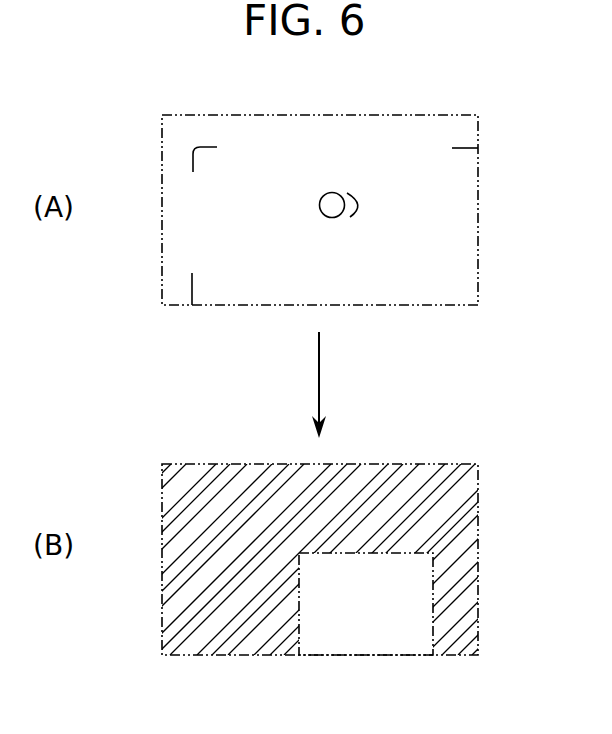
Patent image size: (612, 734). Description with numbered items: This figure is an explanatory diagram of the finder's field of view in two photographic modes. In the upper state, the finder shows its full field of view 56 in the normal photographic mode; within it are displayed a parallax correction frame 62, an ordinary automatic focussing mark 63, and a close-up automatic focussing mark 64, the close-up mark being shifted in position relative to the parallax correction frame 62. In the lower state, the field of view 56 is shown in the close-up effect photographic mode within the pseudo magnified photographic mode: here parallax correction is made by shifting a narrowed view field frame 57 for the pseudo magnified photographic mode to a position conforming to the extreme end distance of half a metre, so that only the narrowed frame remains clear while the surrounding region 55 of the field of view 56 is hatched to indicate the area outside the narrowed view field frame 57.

The field of view 56 is at (448, 114).
The parallax correction frame 62 is at (463, 148).
The ordinary automatic focussing mark 63 is at (322, 215).
The close-up automatic focussing mark 64 is at (360, 202).
The hatched display area 55 is at (465, 565).
The narrowed view field frame 57 is at (430, 628).